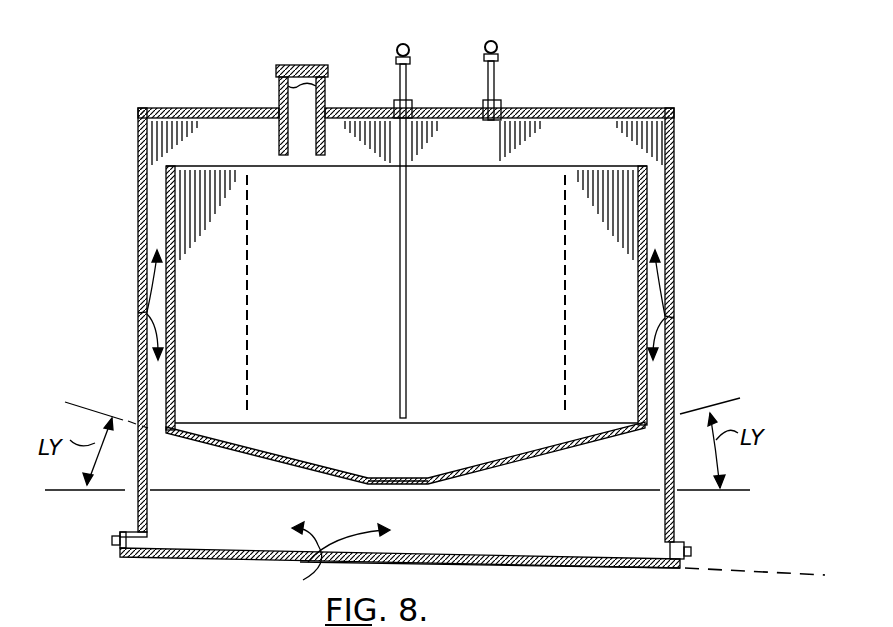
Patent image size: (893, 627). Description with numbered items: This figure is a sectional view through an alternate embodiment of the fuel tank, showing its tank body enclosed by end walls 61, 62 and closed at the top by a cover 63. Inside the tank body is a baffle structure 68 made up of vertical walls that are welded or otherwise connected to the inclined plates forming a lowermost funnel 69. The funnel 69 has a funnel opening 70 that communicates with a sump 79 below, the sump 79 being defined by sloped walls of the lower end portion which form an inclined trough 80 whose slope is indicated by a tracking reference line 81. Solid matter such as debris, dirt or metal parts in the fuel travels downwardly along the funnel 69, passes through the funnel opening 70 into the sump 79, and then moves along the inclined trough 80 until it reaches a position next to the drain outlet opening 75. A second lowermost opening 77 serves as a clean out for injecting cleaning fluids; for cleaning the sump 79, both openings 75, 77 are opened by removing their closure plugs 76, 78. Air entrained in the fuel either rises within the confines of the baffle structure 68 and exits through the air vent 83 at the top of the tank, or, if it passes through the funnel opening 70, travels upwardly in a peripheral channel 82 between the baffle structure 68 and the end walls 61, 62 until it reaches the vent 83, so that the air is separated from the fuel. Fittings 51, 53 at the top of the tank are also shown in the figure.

The eye bolt 51 is at (487, 80).
The rod 53 is at (399, 80).
The end wall 61 is at (138, 225).
The end wall 62 is at (675, 270).
The cover 63 is at (536, 108).
The baffle structure 68 is at (166, 190).
The funnel 69 is at (290, 458).
The funnel opening 70 is at (404, 476).
The opening 75 is at (665, 549).
The closure plug 76 is at (692, 550).
The opening 77 is at (140, 542).
The closure plug 78 is at (112, 541).
The sump 79 is at (303, 580).
The inclined trough 80 is at (592, 568).
The reference line 81 is at (745, 572).
The peripheral channel 82 is at (138, 313).
The air vent 83 is at (279, 96).